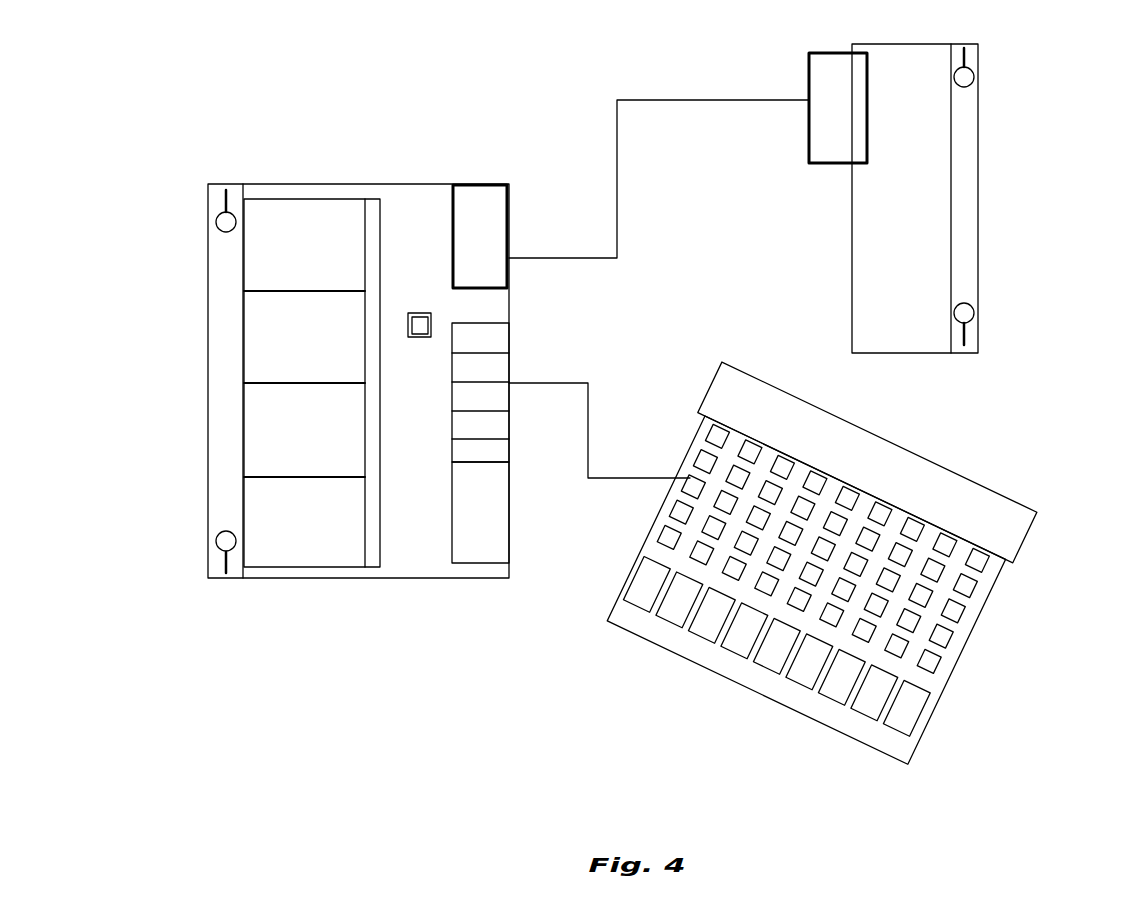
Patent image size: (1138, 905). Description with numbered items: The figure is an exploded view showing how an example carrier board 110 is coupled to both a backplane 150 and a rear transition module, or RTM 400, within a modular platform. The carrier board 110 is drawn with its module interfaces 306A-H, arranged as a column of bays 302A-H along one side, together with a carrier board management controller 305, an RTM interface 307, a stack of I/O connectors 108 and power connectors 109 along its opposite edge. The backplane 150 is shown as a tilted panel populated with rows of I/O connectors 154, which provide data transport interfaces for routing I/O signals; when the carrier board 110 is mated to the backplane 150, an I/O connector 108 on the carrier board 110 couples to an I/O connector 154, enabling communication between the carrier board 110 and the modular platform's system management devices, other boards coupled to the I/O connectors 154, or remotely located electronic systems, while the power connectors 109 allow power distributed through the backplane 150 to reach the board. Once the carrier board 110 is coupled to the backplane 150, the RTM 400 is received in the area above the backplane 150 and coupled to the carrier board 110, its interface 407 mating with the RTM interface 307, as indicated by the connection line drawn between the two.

The carrier board 110 is at (306, 437).
The drive bays 302A-H is at (243, 246).
The module interfaces 306A-H is at (275, 448).
The RTM interface 307 is at (470, 193).
The carrier board management controller 305 is at (432, 313).
The I/O connectors 108 is at (455, 323).
The power connectors 109 is at (454, 518).
The rear transition module (RTM) 400 is at (921, 183).
The interface 407 is at (827, 68).
The backplane 150 is at (798, 592).
The I/O connectors 154 is at (795, 490).